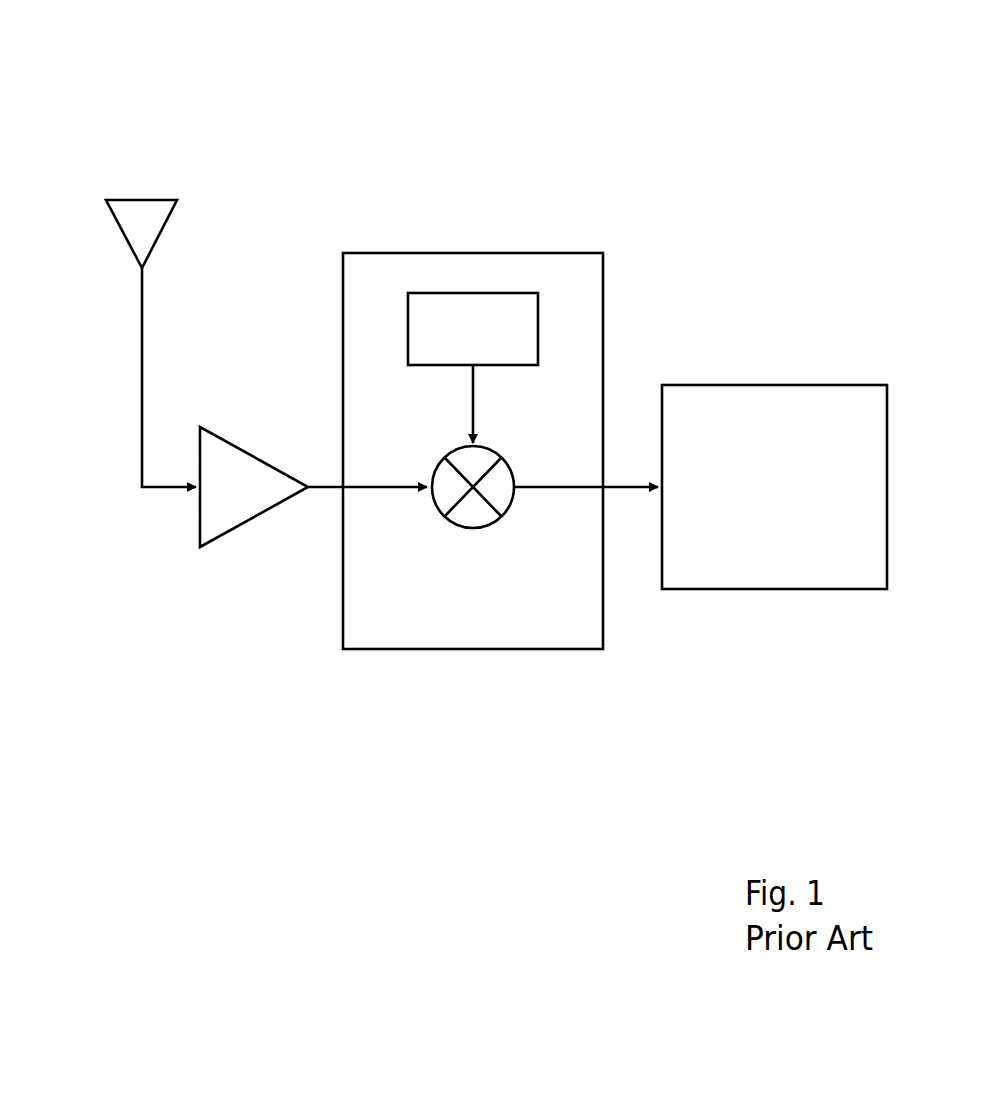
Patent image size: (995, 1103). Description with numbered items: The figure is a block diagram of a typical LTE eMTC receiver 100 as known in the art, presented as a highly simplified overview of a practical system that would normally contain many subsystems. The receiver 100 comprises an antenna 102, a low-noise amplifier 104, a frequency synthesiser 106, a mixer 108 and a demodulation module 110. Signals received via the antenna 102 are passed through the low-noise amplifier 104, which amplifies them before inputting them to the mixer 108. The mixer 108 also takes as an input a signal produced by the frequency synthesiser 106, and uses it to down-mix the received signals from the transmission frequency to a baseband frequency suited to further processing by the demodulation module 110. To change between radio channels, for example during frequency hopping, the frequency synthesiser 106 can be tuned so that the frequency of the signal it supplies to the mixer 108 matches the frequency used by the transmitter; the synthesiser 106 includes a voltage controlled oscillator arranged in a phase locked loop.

The LTE eMTC receiver 100 is at (175, 103).
The antenna 102 is at (122, 235).
The low-noise amplifier 104 is at (266, 506).
The frequency synthesiser 106 is at (500, 347).
The mixer 108 is at (475, 528).
The demodulation module 110 is at (803, 506).